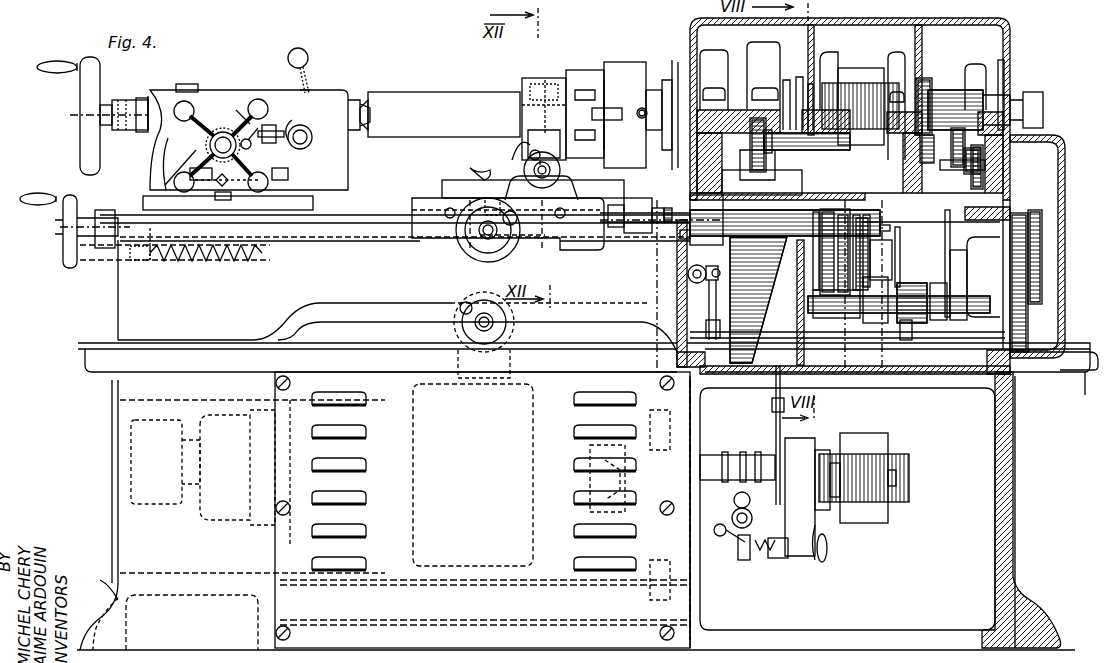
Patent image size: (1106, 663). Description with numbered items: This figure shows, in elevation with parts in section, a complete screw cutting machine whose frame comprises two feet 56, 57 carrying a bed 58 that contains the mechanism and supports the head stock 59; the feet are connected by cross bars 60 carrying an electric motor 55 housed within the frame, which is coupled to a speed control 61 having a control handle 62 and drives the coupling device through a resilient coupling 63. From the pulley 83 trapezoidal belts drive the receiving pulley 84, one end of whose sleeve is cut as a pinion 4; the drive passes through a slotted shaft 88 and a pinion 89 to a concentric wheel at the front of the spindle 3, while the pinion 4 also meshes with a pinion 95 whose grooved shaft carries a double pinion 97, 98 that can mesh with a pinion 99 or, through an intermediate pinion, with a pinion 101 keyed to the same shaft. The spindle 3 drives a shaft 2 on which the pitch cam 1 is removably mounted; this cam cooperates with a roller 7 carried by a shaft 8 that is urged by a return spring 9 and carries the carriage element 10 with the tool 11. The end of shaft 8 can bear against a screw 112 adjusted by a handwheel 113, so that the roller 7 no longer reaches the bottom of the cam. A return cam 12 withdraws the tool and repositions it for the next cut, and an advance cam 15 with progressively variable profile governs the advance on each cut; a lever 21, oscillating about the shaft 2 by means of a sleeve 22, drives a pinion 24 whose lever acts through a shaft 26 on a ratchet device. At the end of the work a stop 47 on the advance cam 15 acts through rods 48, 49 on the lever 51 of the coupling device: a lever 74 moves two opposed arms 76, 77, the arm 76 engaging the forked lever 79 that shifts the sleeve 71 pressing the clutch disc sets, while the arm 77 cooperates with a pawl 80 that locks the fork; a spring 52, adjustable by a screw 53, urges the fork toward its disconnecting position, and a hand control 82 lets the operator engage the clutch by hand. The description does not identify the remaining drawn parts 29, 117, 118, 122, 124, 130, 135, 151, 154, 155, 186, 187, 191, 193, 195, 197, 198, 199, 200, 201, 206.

The pitch cam 1 is at (758, 302).
The shaft 2 is at (848, 305).
The spindle 3 is at (954, 95).
The pinion 4 is at (928, 82).
The roller 7 is at (795, 230).
The shaft 8 is at (660, 232).
The return spring 9 is at (170, 258).
The tool carrying carriage element 10 is at (520, 95).
The tool 11 is at (566, 112).
The return cam 12 is at (1010, 222).
The advance cam 15 is at (900, 235).
The lever 21 is at (940, 262).
The sleeve 22 is at (968, 325).
The pinion 24 is at (878, 245).
The shaft 26 is at (855, 212).
The collar 29 is at (840, 315).
The stop 47 is at (1010, 262).
The rod 48 is at (935, 320).
The rod 49 is at (908, 325).
The lever of coupling device 51 is at (755, 375).
The spring 52 is at (758, 545).
The screw 53 is at (812, 556).
The electric motor 55 is at (258, 540).
The foot 56 is at (158, 630).
The foot 57 is at (847, 509).
The bed 58 is at (428, 240).
The head stock 59 is at (985, 130).
The cross bars 60 is at (470, 600).
The speed control 61 is at (488, 545).
The control handle 62 is at (476, 302).
The resilient coupling 63 is at (618, 512).
The sleeve 71 is at (735, 460).
The lever 74 is at (775, 550).
The arm 76 is at (758, 460).
The arm 77 is at (742, 542).
The forked lever 79 is at (738, 502).
The pawl 80 is at (730, 542).
The hand control 82 is at (700, 258).
The pulley 83 is at (865, 472).
The receiving pulley 84 is at (862, 68).
The slotted shaft 88 is at (826, 132).
The pinion 89 is at (755, 145).
The pinion 95 is at (985, 163).
The pinion 97 is at (960, 130).
The pinion 98 is at (1004, 105).
The pinion 99 is at (982, 185).
The pinion 101 is at (990, 160).
The screw 112 is at (200, 262).
The handwheel 113 is at (68, 258).
The saddle 117 is at (420, 200).
The hand wheel 118 is at (468, 250).
The slide block 122 is at (525, 205).
The tool post 124 is at (522, 115).
The hand wheel 130 is at (562, 200).
The tool holder 135 is at (548, 90).
The clamp 151 is at (475, 170).
The collar 154 is at (640, 205).
The nut 155 is at (623, 200).
The base plate 186 is at (158, 200).
The bracket 187 is at (165, 190).
The nut 191 is at (142, 102).
The collar 193 is at (112, 102).
The hand wheel 195 is at (214, 146).
The spoke 197 is at (247, 118).
The pin 198 is at (248, 150).
The hand wheel 199 is at (85, 85).
The lever knob 200 is at (305, 55).
The lever 201 is at (290, 128).
The boss 206 is at (298, 143).